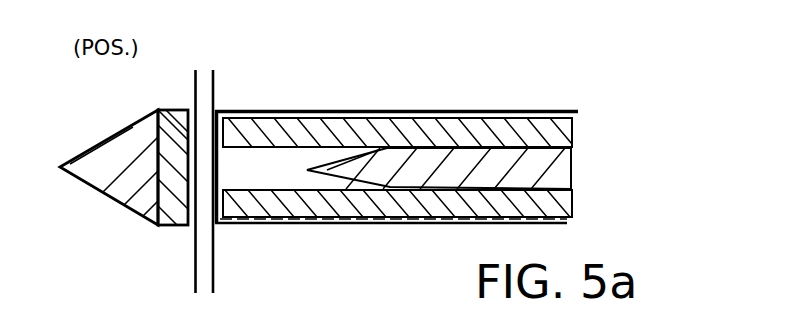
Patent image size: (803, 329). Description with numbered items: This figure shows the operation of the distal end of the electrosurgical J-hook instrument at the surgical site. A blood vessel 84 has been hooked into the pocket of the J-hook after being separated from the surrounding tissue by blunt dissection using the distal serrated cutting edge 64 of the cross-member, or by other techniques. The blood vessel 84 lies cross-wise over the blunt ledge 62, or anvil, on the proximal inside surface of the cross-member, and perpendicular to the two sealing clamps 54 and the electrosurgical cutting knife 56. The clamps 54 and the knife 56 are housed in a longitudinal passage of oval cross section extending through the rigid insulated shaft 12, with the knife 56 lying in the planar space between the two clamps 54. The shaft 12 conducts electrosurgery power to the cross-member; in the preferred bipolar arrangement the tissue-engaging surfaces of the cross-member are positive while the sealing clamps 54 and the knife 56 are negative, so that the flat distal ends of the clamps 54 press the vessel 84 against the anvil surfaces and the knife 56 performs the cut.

The shaft 12 is at (327, 110).
The sealing clamp bars 54 is at (540, 123).
The electrosurgical cutting knife 56 is at (418, 170).
The ledge 62 is at (180, 117).
The serrated cutting edge 64 is at (110, 147).
The blood vessel 84 is at (202, 97).